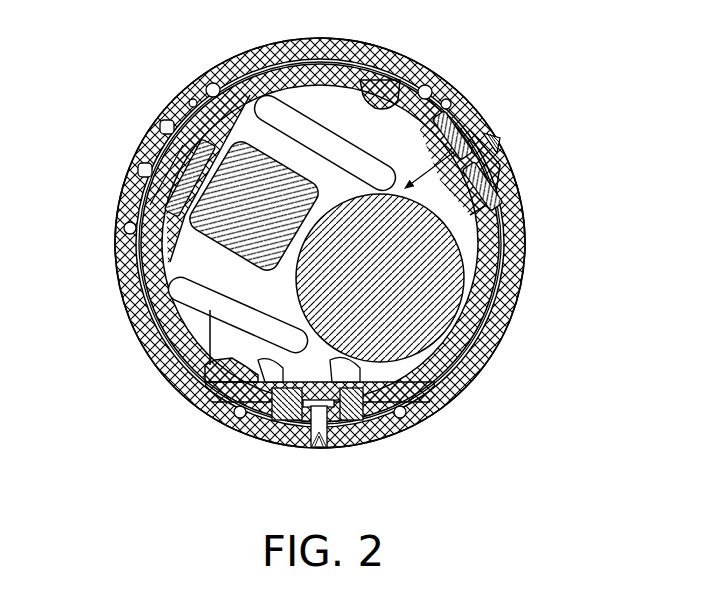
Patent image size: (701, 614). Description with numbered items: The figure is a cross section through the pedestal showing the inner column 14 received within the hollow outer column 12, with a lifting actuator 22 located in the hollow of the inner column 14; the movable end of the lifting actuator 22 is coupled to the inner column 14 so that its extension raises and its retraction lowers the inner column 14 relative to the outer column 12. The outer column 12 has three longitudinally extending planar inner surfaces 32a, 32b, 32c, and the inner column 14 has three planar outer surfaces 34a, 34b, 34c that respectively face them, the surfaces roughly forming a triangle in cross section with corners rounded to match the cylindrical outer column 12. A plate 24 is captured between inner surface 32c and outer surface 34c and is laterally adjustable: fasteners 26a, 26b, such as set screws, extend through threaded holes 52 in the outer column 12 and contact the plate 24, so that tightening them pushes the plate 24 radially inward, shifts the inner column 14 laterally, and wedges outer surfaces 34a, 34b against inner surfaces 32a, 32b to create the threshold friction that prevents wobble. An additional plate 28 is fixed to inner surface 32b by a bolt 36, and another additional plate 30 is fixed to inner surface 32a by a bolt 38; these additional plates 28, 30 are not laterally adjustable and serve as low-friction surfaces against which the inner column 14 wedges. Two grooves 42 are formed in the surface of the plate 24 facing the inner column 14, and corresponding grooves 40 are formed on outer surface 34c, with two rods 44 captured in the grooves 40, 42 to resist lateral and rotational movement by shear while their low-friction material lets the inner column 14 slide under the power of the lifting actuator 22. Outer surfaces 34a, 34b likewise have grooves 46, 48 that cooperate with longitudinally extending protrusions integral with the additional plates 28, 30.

The outer column 12 is at (503, 313).
The inner column 14 is at (392, 58).
The lifting actuator 22 is at (477, 130).
The plate 24 is at (138, 142).
The fastener 26a is at (150, 110).
The fastener 26b is at (127, 168).
The additional plate 28 is at (360, 440).
The additional plate 30 is at (490, 185).
The planar inner surface 32a is at (523, 232).
The planar inner surface 32b is at (440, 405).
The planar inner surface 32c is at (117, 247).
The planar outer surface 34a is at (447, 98).
The planar outer surface 34b is at (241, 433).
The planar outer surface 34c is at (195, 92).
The bolt 36 is at (323, 453).
The bolt 38 is at (498, 156).
The groove 40 is at (264, 62).
The groove 42 is at (157, 112).
The rod 44 is at (232, 134).
The groove 46 is at (413, 142).
The groove 48 is at (270, 381).
The threaded hole 52 is at (148, 125).